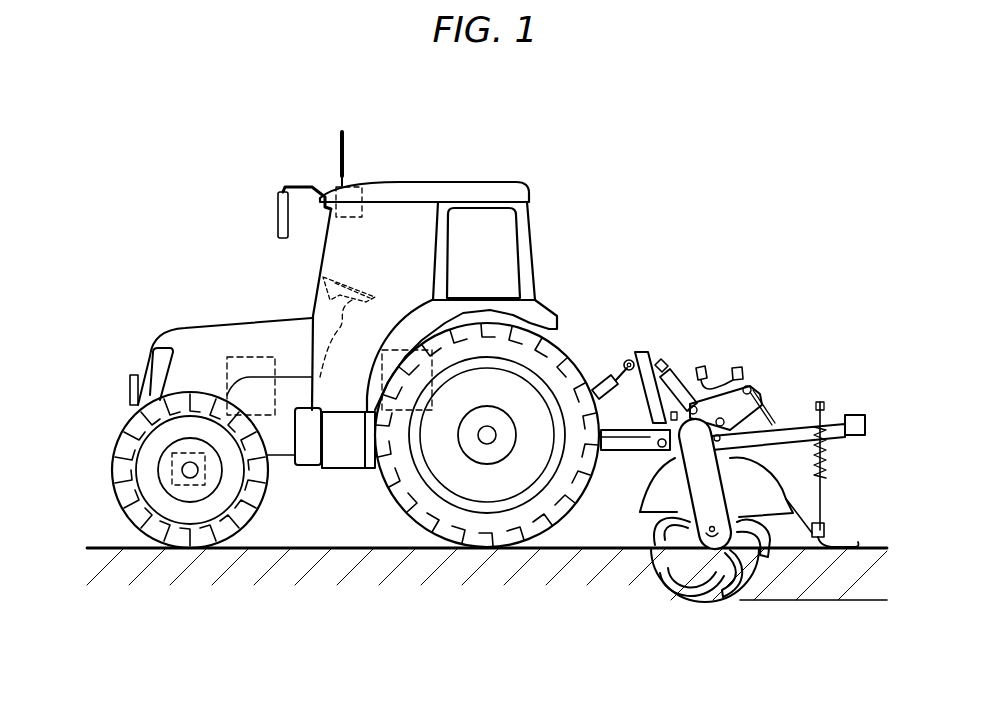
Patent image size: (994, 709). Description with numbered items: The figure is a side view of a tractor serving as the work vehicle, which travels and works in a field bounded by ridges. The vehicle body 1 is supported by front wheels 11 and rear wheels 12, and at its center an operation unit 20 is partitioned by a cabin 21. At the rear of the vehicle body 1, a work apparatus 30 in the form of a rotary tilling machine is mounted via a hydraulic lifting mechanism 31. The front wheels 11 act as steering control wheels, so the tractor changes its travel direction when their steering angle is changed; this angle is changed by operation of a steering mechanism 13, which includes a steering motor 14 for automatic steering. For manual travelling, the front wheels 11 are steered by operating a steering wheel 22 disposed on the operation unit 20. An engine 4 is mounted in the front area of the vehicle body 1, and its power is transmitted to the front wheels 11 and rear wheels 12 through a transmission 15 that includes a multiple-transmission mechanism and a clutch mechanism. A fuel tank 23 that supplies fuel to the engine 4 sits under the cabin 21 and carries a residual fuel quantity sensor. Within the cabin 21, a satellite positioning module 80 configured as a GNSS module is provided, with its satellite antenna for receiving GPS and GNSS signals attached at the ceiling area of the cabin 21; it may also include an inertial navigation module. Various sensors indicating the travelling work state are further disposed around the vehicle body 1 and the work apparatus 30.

The vehicle body 1 is at (312, 480).
The engine 4 is at (250, 357).
The front wheels 11 is at (183, 550).
The rear wheels 12 is at (496, 540).
The steering mechanism 13 is at (162, 474).
The steering motor 14 is at (172, 452).
The transmission 15 is at (333, 462).
The operation unit 20 is at (447, 220).
The cabin 21 is at (510, 190).
The steering wheel 22 is at (350, 278).
The fuel tank 23 is at (403, 413).
The work apparatus 30 is at (713, 585).
The hydraulic lifting mechanism 31 is at (660, 352).
The satellite positioning module 80 is at (353, 176).